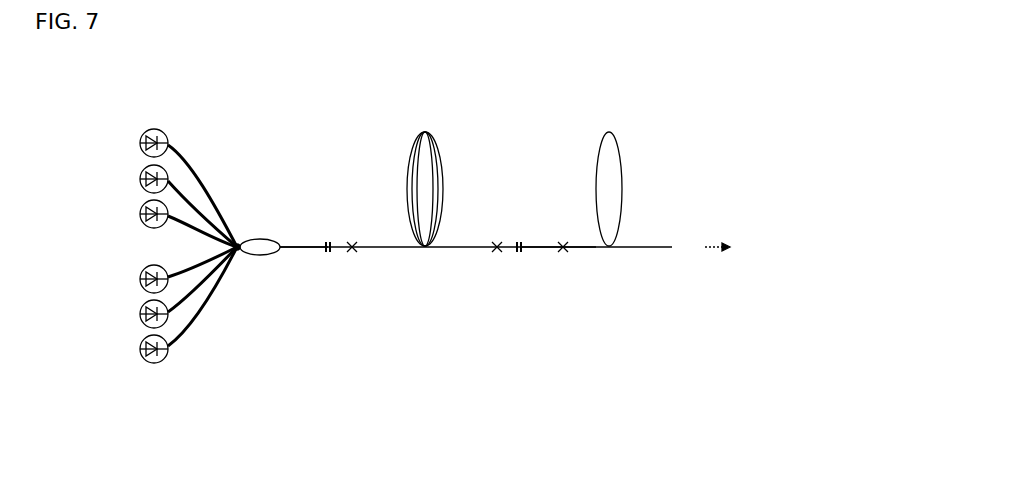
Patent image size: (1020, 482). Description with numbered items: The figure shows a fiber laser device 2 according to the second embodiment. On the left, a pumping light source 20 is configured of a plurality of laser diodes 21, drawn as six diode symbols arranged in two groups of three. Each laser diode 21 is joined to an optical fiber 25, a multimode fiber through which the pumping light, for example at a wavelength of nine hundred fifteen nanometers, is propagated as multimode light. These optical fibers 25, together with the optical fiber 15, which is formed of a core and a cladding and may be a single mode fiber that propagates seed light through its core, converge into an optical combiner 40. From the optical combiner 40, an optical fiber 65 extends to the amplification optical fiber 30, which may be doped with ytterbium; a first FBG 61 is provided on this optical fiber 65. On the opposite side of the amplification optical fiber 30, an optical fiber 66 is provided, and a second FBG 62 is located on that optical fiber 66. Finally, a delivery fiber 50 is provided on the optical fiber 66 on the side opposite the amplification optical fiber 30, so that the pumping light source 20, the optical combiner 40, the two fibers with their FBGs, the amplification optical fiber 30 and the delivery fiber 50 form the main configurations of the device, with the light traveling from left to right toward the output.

The fiber laser device 2 is at (528, 111).
The pumping light source 20 is at (131, 112).
The laser diode 21 is at (142, 135).
The optical fiber 25 is at (181, 193).
The optical fiber 15 is at (229, 237).
The optical combiner 40 is at (266, 250).
The optical fiber 65 is at (310, 245).
The first FBG 61 is at (329, 253).
The amplification optical fiber 30 is at (457, 245).
The second FBG 62 is at (520, 253).
The optical fiber 66 is at (543, 245).
The delivery fiber 50 is at (627, 245).